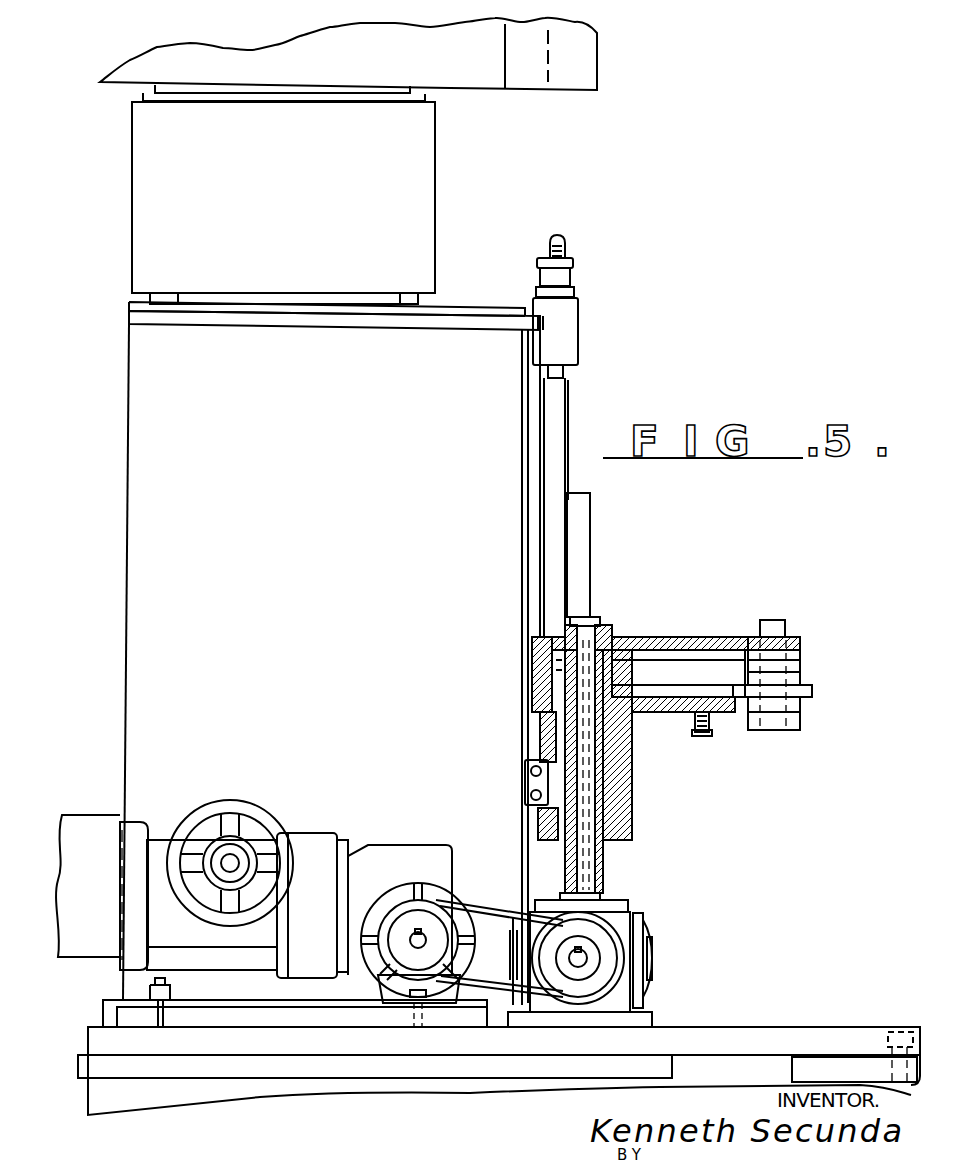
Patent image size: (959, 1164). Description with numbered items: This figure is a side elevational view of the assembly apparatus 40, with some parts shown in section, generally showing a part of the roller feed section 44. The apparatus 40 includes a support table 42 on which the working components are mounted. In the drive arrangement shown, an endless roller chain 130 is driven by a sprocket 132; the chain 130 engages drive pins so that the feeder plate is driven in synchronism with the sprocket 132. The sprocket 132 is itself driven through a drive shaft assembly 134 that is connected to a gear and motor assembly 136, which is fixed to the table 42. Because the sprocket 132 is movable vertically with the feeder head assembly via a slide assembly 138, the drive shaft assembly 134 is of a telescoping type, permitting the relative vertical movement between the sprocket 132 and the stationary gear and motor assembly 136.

The assembly apparatus 40 is at (655, 544).
The support table 42 is at (425, 1094).
The roller feed section 44 is at (625, 620).
The endless roller chain 130 is at (810, 668).
The sprocket 132 is at (636, 648).
The drive shaft assembly 134 is at (537, 623).
The gear and motor assembly 136 is at (483, 895).
The slide assembly 138 is at (530, 820).